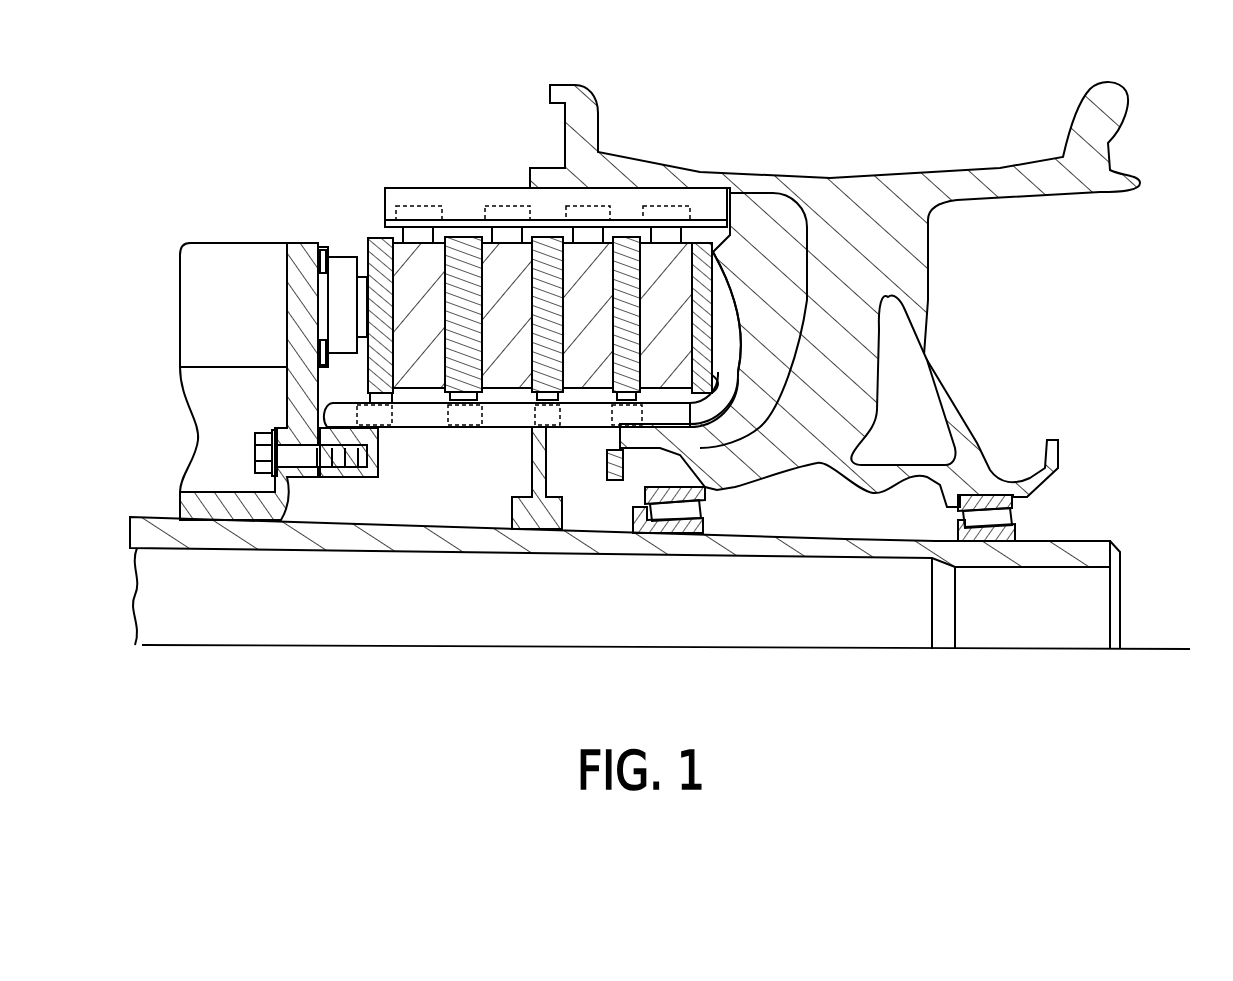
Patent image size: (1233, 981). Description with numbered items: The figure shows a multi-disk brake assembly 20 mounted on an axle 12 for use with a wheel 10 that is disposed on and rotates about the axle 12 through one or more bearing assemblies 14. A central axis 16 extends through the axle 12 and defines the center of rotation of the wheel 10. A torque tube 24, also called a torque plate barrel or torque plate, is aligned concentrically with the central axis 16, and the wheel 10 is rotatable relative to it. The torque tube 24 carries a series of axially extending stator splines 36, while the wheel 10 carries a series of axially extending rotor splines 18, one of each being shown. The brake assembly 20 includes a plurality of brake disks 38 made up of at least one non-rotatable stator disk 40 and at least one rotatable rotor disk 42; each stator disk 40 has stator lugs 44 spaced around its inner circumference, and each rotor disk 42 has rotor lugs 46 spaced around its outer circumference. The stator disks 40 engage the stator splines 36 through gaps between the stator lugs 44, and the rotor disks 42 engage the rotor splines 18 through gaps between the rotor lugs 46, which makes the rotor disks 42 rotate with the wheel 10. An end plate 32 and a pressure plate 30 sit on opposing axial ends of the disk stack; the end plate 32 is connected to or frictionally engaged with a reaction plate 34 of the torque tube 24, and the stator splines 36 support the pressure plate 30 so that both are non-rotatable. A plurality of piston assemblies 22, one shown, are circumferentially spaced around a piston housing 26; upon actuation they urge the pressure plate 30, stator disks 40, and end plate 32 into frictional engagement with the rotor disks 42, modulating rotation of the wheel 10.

The wheel 10 is at (855, 180).
The axle 12 is at (845, 548).
The bearing assemblies 14 is at (680, 512).
The central axis 16 is at (1172, 649).
The rotor splines 18 is at (531, 167).
The multi-disk brake assembly 20 is at (508, 290).
The piston assemblies 22 is at (324, 324).
The torque tube 24 is at (425, 435).
The piston housing 26 is at (245, 243).
The pressure plate 30 is at (375, 252).
The end plate 32 is at (703, 250).
The reaction plate 34 is at (727, 307).
The stator splines 36 is at (493, 432).
The brake disks 38 is at (378, 218).
The stator disk 40 is at (461, 388).
The rotor disk 42 is at (417, 255).
The stator lugs 44 is at (602, 412).
The rotor lugs 46 is at (650, 207).